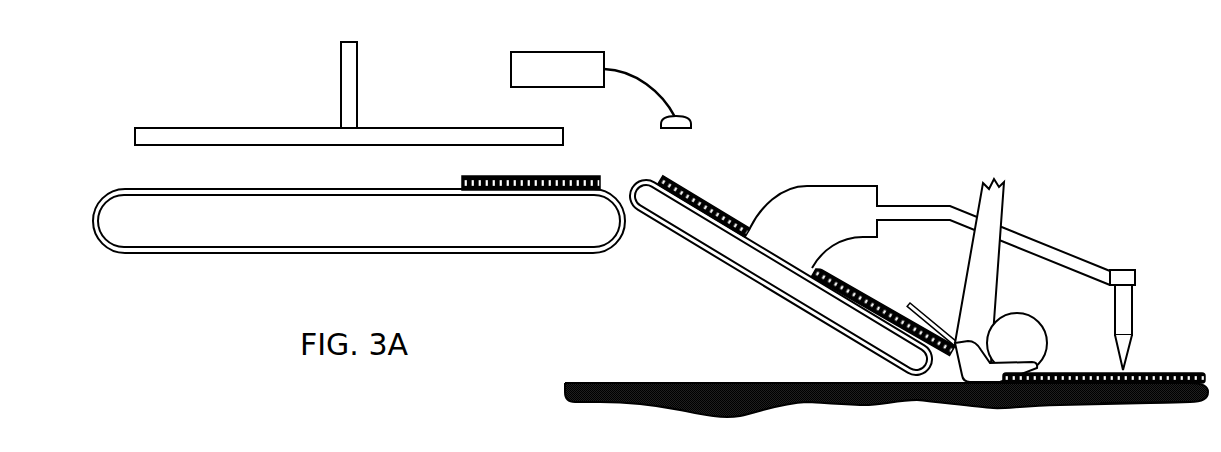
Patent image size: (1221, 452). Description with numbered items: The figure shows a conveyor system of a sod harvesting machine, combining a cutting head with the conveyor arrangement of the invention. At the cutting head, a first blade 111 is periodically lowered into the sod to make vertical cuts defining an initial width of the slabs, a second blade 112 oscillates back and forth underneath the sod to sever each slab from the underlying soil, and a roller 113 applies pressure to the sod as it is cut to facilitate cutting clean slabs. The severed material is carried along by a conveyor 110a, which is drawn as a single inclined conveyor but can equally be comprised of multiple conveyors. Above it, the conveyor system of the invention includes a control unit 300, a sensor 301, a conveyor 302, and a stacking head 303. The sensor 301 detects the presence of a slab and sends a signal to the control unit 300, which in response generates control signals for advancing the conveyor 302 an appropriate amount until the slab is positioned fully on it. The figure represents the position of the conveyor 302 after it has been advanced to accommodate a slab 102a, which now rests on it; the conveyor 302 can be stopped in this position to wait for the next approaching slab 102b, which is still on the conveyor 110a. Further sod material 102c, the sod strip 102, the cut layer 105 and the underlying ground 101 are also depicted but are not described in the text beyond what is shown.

The control unit 300 is at (973, 112).
The sensor 301 is at (687, 117).
The conveyor 302 is at (235, 254).
The stacking head 303 is at (339, 75).
The slab 102a is at (600, 176).
The slab 102b is at (682, 185).
The strip segment at applicator 102c is at (850, 279).
The strip / tape 102 is at (1160, 403).
The applied strip on substrate 105 is at (1060, 373).
The conveyor 110a is at (692, 250).
The first blade 111 is at (1130, 358).
The second blade 112 is at (962, 405).
The roller 113 is at (1042, 323).
The substrate 101 is at (566, 395).